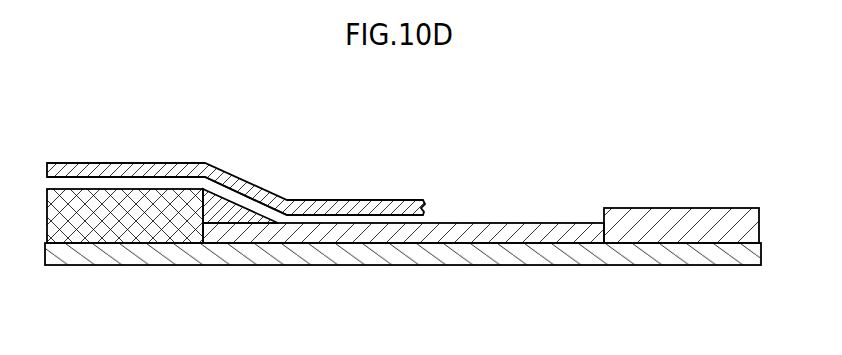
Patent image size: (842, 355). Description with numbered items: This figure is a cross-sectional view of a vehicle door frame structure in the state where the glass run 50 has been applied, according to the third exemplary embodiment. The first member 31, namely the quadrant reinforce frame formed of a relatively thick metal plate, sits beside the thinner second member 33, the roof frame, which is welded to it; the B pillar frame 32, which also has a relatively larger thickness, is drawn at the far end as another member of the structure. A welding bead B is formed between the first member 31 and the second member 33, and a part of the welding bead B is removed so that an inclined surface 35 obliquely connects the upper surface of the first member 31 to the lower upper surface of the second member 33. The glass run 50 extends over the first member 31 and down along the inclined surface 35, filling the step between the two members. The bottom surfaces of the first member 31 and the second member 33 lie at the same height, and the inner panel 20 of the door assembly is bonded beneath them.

The inner panel 20 is at (413, 258).
The first member 31 is at (61, 207).
The B pillar frame 32 is at (690, 226).
The second member 33 is at (490, 231).
The inclined surface 35 is at (250, 206).
The glass run 50 is at (247, 177).
The welding bead B is at (238, 218).